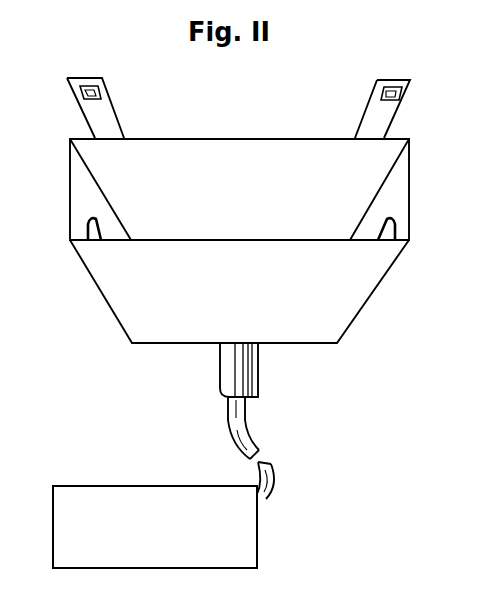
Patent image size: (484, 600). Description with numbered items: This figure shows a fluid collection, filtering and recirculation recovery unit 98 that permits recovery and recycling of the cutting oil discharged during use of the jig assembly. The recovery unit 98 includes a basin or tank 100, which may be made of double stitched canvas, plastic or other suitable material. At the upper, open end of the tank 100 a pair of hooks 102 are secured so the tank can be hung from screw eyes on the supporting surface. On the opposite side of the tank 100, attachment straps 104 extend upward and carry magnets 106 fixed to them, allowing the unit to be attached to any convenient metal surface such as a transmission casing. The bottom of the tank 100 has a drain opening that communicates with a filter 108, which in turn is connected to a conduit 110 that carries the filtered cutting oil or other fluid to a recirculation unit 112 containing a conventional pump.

The recovery unit 98 is at (247, 124).
The basin or tank 100 is at (347, 307).
The hooks 102 is at (85, 222).
The attachment straps 104 is at (123, 126).
The magnets 106 is at (86, 88).
The filter 108 is at (259, 388).
The conduit 110 is at (275, 483).
The recirculation unit 112 is at (257, 541).